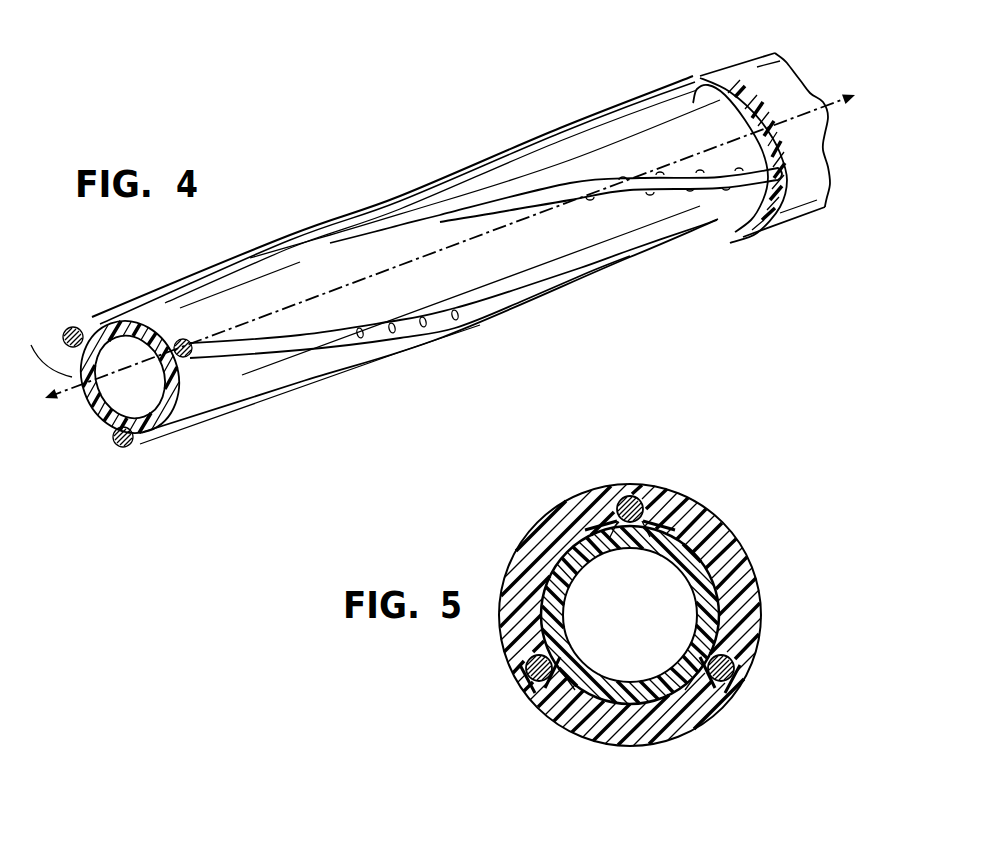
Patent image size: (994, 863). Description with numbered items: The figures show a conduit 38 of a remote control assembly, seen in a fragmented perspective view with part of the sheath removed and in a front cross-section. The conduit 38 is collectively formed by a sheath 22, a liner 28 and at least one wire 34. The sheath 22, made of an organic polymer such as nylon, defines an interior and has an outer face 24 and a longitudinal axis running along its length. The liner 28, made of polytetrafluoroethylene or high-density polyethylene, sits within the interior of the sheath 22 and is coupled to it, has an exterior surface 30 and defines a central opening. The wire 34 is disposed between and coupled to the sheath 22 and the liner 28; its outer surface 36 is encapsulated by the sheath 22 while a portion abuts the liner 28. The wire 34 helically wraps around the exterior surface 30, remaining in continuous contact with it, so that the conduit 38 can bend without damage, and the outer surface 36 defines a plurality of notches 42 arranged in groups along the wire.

In FIG. 4, the sheath 22 is at (729, 88).
In FIG. 5, the sheath 22 is at (737, 560).
In FIG. 4, the outer face 24 is at (803, 226).
In FIG. 5, the outer face 24 is at (673, 740).
In FIG. 4, the liner 28 is at (173, 390).
In FIG. 5, the liner 28 is at (612, 703).
In FIG. 4, the exterior surface 30 is at (217, 380).
In FIG. 5, the exterior surface 30 is at (573, 697).
In FIG. 4, the wire 34 is at (328, 225).
In FIG. 5, the wire 34 is at (632, 497).
In FIG. 4, the outer surface 36 is at (268, 238).
In FIG. 4, the conduit 38 is at (534, 106).
In FIG. 5, the conduit 38 is at (737, 720).
In FIG. 4, the notches 42 is at (697, 198).
In FIG. 5, the notches 42 is at (668, 505).